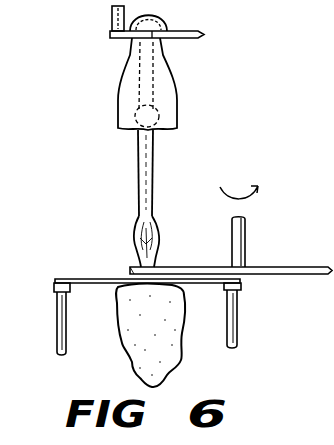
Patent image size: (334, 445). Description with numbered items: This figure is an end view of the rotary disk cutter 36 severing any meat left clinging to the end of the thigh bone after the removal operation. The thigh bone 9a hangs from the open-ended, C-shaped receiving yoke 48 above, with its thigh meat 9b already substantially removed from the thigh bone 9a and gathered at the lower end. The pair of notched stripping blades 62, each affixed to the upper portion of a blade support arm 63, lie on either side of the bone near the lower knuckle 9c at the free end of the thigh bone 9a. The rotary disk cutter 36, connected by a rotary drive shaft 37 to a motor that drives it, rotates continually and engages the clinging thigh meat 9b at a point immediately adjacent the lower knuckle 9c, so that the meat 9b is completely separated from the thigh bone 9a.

The receiving yoke 48 is at (113, 33).
The thigh bone 9a is at (150, 177).
The thigh meat 9b is at (183, 360).
The lower knuckle 9c is at (140, 231).
The rotary disk cutter 36 is at (287, 267).
The rotary drive shaft 37 is at (245, 236).
The notched stripping blades 62 is at (84, 258).
The blade support arm 63 is at (56, 313).